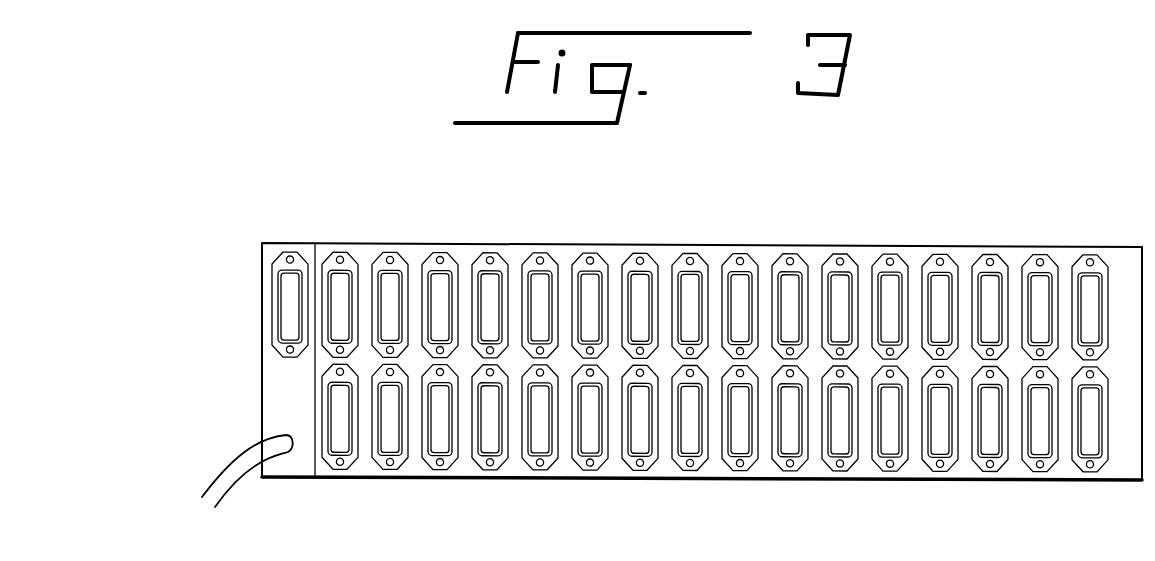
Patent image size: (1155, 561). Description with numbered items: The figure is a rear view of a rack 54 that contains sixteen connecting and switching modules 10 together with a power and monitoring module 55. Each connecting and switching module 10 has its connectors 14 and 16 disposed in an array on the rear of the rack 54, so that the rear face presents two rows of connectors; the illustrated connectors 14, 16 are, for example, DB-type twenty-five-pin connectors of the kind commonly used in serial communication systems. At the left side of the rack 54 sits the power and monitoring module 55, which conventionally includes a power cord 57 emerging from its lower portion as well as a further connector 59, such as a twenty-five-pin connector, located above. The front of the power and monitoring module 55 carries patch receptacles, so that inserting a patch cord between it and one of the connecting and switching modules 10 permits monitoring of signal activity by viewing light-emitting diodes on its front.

The connecting and switching module 10 is at (320, 360).
The connector 14 is at (321, 296).
The connector 16 is at (320, 427).
The rack 54 is at (1002, 247).
The power and monitoring module 55 is at (290, 378).
The power cord 57 is at (227, 472).
The further connector 59 is at (272, 302).